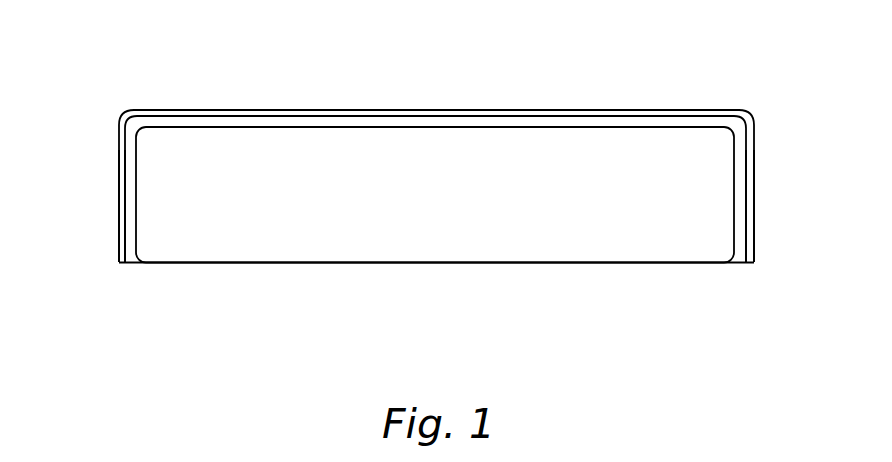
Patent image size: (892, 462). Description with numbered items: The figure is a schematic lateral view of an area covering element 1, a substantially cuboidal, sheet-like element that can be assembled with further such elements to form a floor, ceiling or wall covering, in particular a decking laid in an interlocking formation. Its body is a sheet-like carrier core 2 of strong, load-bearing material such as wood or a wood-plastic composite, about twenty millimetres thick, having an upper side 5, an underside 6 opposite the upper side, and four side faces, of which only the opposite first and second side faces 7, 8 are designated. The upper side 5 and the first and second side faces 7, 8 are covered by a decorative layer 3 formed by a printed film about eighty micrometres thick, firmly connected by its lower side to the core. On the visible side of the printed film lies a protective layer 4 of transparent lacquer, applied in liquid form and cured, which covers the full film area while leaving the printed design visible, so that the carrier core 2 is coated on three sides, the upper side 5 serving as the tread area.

The area covering element 1 is at (96, 76).
The sheet-like carrier core 2 is at (370, 206).
The decorative layer 3 is at (310, 127).
The protective layer 4 is at (434, 116).
The upper side 5 is at (561, 127).
The underside 6 is at (486, 264).
The first side face 7 is at (140, 192).
The second side face 8 is at (734, 190).